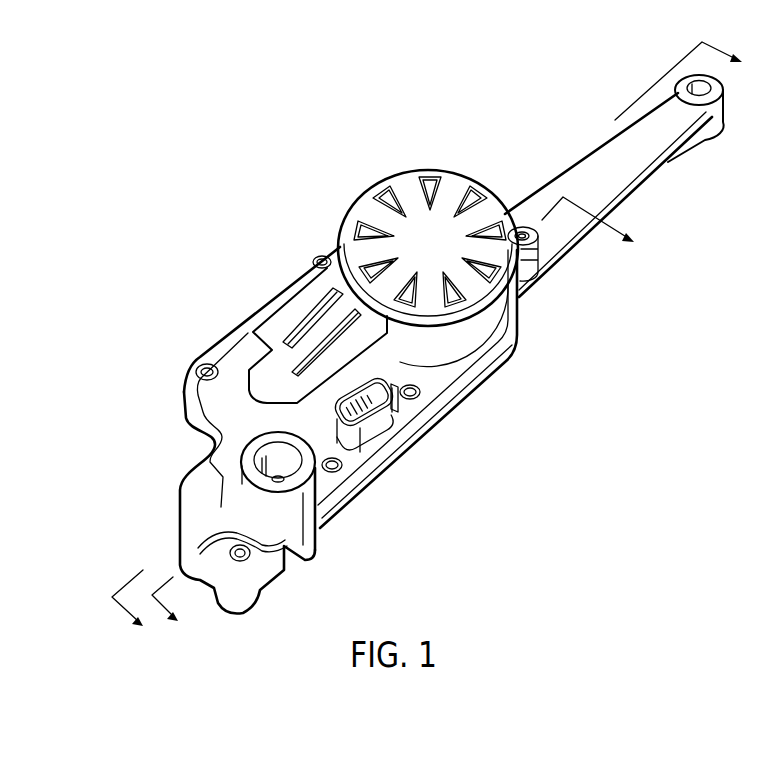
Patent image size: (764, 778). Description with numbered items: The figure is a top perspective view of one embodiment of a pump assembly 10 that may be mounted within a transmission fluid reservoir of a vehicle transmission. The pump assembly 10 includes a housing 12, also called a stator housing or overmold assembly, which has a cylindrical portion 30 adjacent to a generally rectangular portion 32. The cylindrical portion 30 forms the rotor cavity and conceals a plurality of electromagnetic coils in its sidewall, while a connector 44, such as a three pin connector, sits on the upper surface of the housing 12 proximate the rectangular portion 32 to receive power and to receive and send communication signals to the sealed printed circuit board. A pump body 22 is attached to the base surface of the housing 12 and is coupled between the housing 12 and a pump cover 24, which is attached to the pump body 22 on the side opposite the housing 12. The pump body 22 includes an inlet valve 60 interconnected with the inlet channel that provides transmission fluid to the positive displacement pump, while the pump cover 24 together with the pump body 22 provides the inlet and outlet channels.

The pump assembly 10 is at (276, 91).
The housing 12 is at (277, 288).
The pump body 22 is at (187, 417).
The pump cover 24 is at (630, 177).
The cylindrical portion 30 is at (407, 177).
The rectangular portion 32 is at (258, 337).
The connector 44 is at (388, 398).
The inlet valve 60 is at (292, 465).